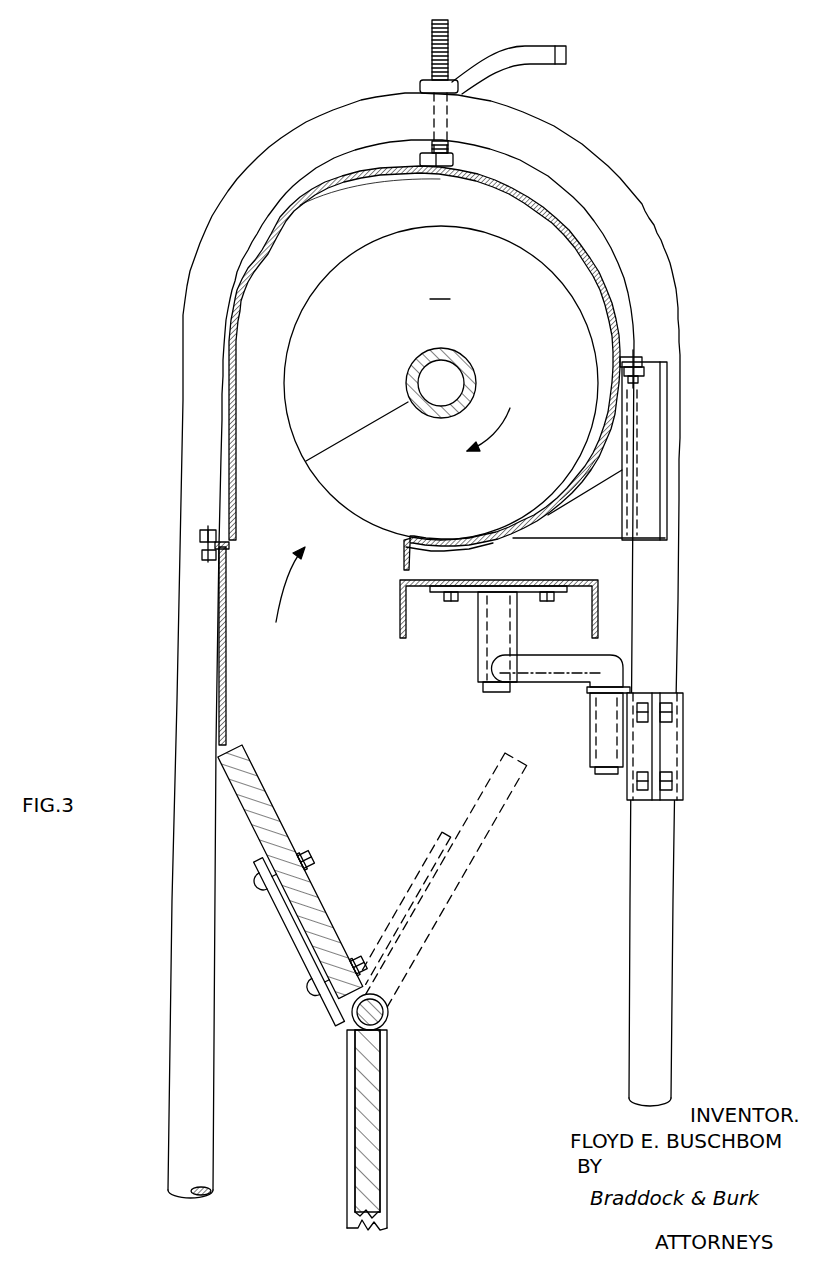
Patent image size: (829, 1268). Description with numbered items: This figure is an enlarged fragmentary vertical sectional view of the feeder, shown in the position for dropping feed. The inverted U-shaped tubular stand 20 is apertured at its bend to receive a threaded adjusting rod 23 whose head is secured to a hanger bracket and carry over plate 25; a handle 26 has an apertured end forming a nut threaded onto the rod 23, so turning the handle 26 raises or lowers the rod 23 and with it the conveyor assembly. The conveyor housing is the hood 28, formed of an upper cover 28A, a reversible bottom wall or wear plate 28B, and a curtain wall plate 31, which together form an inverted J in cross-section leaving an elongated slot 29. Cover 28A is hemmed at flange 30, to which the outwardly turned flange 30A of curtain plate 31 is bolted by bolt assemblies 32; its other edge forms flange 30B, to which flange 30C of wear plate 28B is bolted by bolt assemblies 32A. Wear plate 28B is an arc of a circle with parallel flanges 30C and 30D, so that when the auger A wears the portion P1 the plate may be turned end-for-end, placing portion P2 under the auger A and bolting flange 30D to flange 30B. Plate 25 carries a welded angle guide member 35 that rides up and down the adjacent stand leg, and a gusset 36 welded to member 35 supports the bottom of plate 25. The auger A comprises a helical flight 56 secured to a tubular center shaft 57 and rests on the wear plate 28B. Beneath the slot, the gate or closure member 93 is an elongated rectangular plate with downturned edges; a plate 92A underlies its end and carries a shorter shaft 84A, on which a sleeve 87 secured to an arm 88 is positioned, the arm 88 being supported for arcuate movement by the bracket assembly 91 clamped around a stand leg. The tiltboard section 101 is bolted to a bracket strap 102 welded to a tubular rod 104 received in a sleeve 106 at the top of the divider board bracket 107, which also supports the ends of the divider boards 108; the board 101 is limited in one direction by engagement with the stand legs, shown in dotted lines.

The stand 20 is at (672, 556).
The adjusting rod 23 is at (452, 33).
The hanger bracket and carry over plate 25 is at (586, 234).
The handle 26 is at (566, 52).
The housing shroud or hood 28 is at (255, 253).
The upper cover 28A is at (290, 225).
The reversible bottom wall or wear plate 28B is at (575, 477).
The elongated aperture or slot 29 is at (283, 602).
The hemmed flange 30 is at (200, 545).
The outwardly turned flange of curtain wall plate 30A is at (205, 556).
The outwardly turned flange of upper cover 30B is at (646, 365).
The outwardly turned flange of wear plate 30C is at (642, 376).
The outwardly turned flange of wear plate 30D is at (403, 563).
The curtain wall plate 31 is at (219, 630).
The bolt assemblies 32 is at (204, 534).
The bolt assemblies 32A is at (636, 356).
The guide member 35 is at (667, 446).
The gusset 36 is at (590, 523).
The helical flight 56 is at (291, 427).
The tubular center shaft 57 is at (452, 350).
The shorter shaft 84A is at (493, 692).
The second sleeve 87 is at (480, 646).
The arm 88 is at (552, 675).
The bracket assembly 91 is at (685, 736).
The plate 92A is at (470, 597).
The gate or closure member 93 is at (400, 611).
The tiltboard section 101 is at (272, 808).
The bracket strap 102 is at (307, 941).
The tubular rod 104 is at (388, 1008).
The sleeve 106 is at (388, 1015).
The divider board bracket 107 is at (380, 1221).
The divider board 108 is at (368, 1102).
The wear portion P1 is at (458, 552).
The wear portion P2 is at (618, 430).
The auger A is at (440, 288).